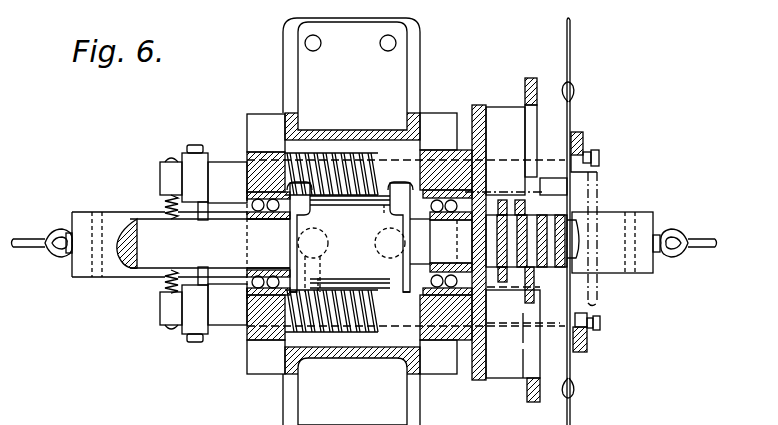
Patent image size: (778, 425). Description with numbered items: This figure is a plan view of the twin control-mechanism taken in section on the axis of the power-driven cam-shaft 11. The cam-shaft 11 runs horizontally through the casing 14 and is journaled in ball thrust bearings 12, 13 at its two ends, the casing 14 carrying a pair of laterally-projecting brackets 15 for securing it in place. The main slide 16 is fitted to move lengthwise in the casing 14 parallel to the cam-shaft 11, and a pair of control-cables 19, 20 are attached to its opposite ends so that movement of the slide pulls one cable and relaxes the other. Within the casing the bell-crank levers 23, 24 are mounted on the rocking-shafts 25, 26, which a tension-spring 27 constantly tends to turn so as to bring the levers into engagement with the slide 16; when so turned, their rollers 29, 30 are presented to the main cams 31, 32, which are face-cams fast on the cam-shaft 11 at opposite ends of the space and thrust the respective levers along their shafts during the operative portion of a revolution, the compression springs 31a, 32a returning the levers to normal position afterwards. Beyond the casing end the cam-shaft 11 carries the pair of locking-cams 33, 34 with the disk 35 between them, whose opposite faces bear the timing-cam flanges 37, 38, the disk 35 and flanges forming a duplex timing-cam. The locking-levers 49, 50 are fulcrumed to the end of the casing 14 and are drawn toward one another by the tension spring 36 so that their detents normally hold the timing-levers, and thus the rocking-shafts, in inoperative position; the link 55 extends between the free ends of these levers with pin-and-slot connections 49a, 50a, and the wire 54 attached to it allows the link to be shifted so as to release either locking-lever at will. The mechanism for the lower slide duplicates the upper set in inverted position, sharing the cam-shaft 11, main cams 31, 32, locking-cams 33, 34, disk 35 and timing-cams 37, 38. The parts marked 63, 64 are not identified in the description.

The power-driven cam-shaft 11 is at (126, 268).
The ball thrust bearing 12 is at (271, 220).
The ball thrust bearing 13 is at (438, 263).
The casing 14 is at (377, 138).
The laterally-projecting bracket 15 is at (392, 65).
The main slide 16 is at (108, 213).
The control-cable 19 is at (25, 241).
The control-cable 20 is at (700, 240).
The bell-crank lever 23 is at (318, 278).
The bell-crank lever 24 is at (385, 205).
The rocking-shaft 25 is at (228, 325).
The rocking-shaft 26 is at (228, 162).
The tension-spring 27 is at (164, 205).
The roller 29 is at (333, 238).
The roller 30 is at (382, 249).
The main cam 31 is at (291, 304).
The spring 31a is at (363, 332).
The main cam 32 is at (397, 196).
The spring 32a is at (328, 160).
The locking-cam 33 is at (504, 282).
The locking-cam 34 is at (549, 285).
The disk 35 is at (527, 308).
The tension spring 36 is at (600, 186).
The timing-cam flange 37 is at (517, 192).
The timing-cam flange 38 is at (531, 192).
The locking-lever 49 is at (587, 352).
The pin-and-slot connection 49a is at (570, 340).
The locking-lever 50 is at (586, 135).
The pin-and-slot connection 50a is at (568, 147).
The wire 54 is at (572, 33).
The link 55 is at (573, 108).
The bolt 63 is at (208, 288).
The bolt 64 is at (208, 206).